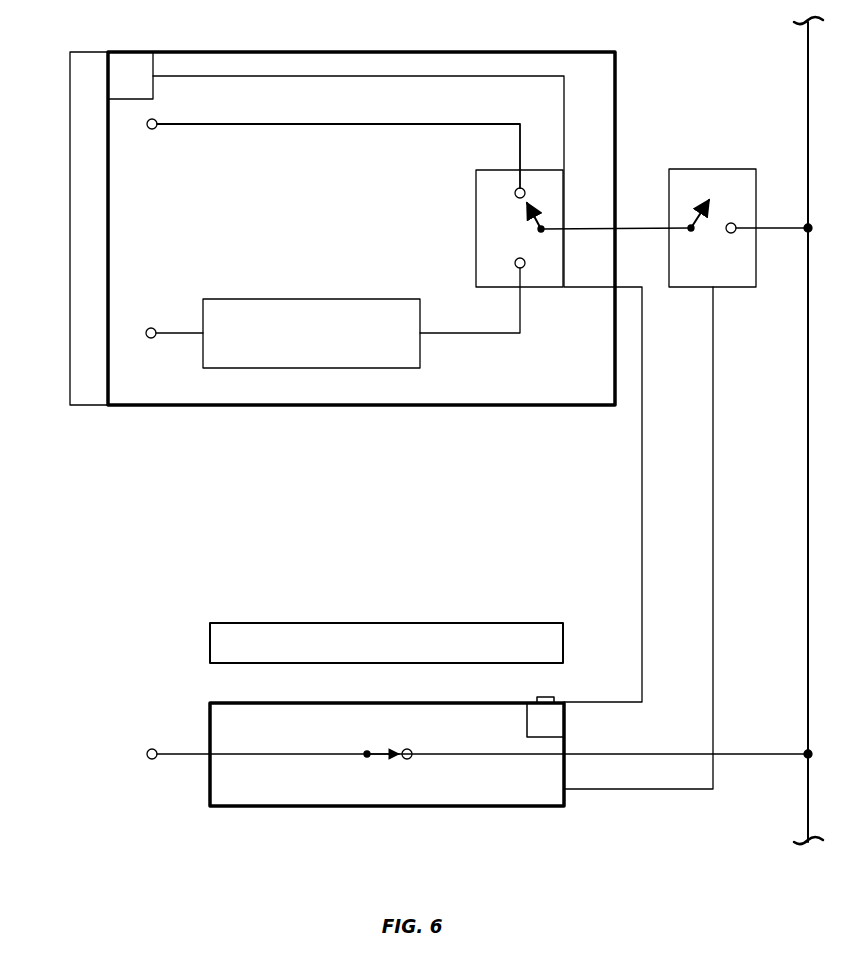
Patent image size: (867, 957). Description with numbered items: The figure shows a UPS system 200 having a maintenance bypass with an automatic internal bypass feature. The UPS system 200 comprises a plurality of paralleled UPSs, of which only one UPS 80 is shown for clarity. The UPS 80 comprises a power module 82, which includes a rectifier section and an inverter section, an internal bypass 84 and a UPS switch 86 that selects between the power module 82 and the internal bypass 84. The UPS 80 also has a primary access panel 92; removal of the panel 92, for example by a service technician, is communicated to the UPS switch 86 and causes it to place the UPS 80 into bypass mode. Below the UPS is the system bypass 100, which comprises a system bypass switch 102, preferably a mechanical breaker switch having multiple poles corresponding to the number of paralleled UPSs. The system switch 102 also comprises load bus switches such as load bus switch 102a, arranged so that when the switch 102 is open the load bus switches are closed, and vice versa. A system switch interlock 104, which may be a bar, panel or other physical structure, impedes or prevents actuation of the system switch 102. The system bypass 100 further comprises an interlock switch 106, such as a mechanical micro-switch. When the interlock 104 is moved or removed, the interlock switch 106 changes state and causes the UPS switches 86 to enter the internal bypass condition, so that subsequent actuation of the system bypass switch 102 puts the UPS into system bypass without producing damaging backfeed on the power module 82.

The UPS 80 is at (588, 52).
The power module 82 is at (222, 298).
The internal bypass 84 is at (490, 124).
The UPS switch 86 is at (476, 229).
The primary access panel 92 is at (88, 229).
The system bypass 100 is at (192, 571).
The system bypass switch 102 is at (290, 806).
The load bus switch 102a is at (713, 169).
The system switch interlock 104 is at (290, 623).
The interlock switch 106 is at (550, 720).
The UPS system 200 is at (76, 432).